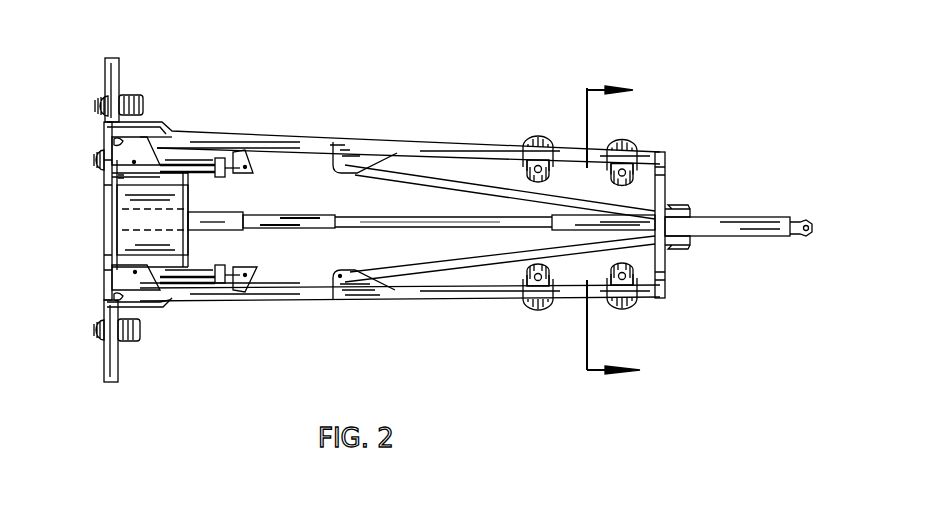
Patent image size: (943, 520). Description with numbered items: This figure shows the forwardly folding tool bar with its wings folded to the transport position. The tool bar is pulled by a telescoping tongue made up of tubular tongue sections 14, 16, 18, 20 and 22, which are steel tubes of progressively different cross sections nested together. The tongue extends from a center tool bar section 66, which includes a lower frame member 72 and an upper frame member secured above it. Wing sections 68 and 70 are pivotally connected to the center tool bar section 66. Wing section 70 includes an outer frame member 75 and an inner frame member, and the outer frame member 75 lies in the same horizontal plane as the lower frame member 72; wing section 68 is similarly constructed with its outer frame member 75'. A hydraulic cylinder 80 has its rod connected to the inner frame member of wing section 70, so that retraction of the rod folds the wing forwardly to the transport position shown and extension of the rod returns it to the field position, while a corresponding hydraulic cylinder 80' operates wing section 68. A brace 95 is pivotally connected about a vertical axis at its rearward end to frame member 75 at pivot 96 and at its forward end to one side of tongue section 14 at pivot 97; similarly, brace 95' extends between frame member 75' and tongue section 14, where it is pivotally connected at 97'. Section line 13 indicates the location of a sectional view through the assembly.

The section line 13- 13 is at (599, 232).
The tongue section 14 is at (728, 227).
The tongue section 16 is at (623, 227).
The tongue section 18 is at (383, 219).
The tongue section 20 is at (299, 217).
The tongue section 22 is at (233, 211).
The center tool bar section 66 is at (98, 210).
The wing section 68 is at (320, 308).
The wing section 70 is at (295, 128).
The lower frame member 72 is at (122, 61).
The outer frame member 75 is at (500, 153).
The outer frame member 75' is at (500, 303).
The hydraulic cylinder 80 is at (206, 127).
The hydraulic cylinder 80' is at (206, 324).
The brace 95 is at (580, 149).
The brace 95' is at (579, 309).
The pivotal connection 96 is at (341, 170).
The pivotal connection 97 is at (708, 171).
The pivotal connection 97' is at (708, 256).